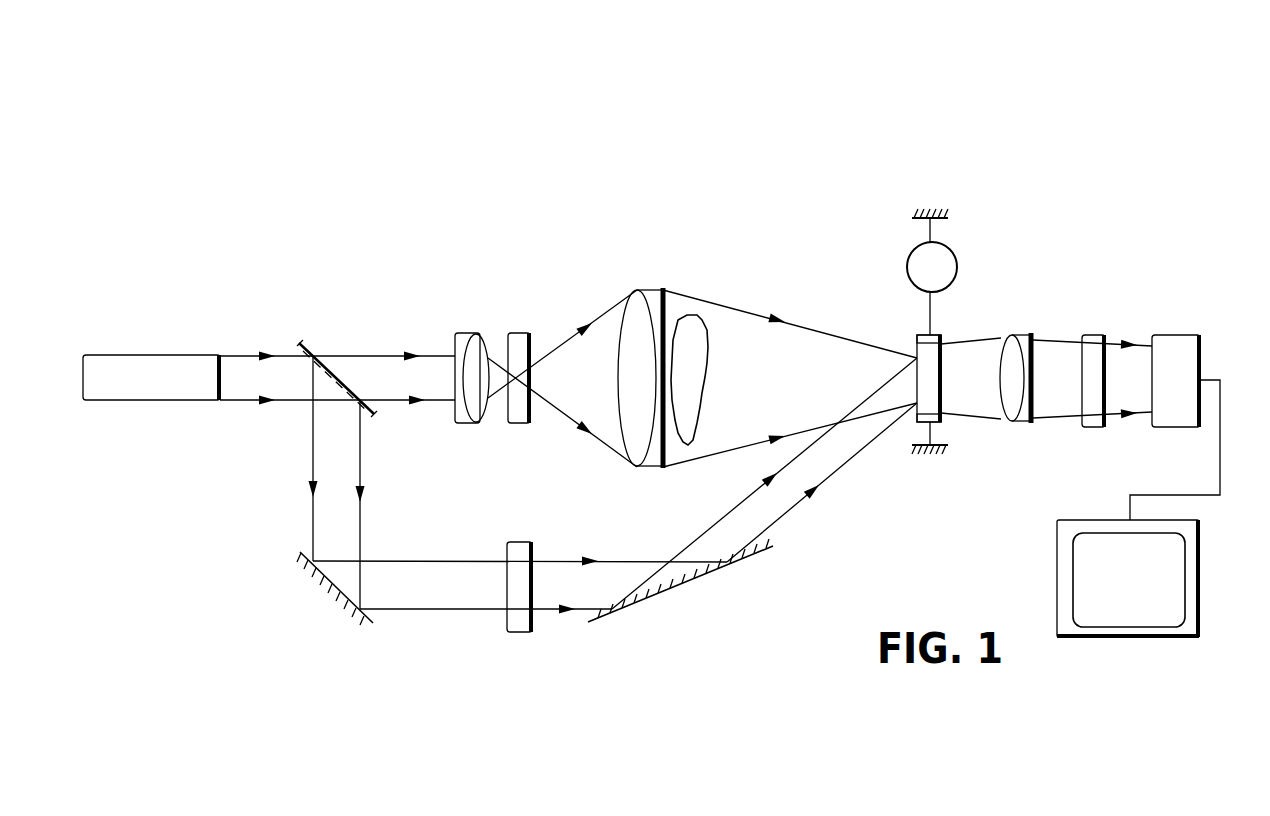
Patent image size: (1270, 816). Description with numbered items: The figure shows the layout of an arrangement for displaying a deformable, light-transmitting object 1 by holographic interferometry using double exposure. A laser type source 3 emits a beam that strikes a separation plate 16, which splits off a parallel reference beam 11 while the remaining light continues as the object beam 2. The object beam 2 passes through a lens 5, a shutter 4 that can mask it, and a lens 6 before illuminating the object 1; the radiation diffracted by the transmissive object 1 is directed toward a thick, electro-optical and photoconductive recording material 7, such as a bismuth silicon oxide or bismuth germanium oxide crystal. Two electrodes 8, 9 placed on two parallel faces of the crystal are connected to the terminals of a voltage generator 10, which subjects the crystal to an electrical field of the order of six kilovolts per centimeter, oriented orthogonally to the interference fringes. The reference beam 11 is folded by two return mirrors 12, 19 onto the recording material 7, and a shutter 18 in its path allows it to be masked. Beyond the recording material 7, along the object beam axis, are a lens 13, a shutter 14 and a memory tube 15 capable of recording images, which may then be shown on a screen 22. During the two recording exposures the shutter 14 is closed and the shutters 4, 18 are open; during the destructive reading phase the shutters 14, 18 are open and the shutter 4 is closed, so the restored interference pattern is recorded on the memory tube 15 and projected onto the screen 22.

The deformable object 1 is at (690, 312).
The object beam 2 is at (818, 328).
The laser type source 3 is at (133, 355).
The shutter 4 is at (516, 333).
The lens 5 is at (464, 333).
The lens 6 is at (645, 290).
The recording material 7 is at (917, 405).
The electrode 8 is at (943, 421).
The electrode 9 is at (966, 302).
The voltage generator 10 is at (957, 264).
The reference beam 11 is at (313, 452).
The return mirror 12 is at (328, 582).
The lens 13 is at (1017, 335).
The shutter 14 is at (1092, 335).
The memory tube 15 is at (1172, 335).
The separation plate 16 is at (312, 348).
The shutter 18 is at (520, 633).
The return mirror 19 is at (677, 587).
The screen 22 is at (1118, 637).